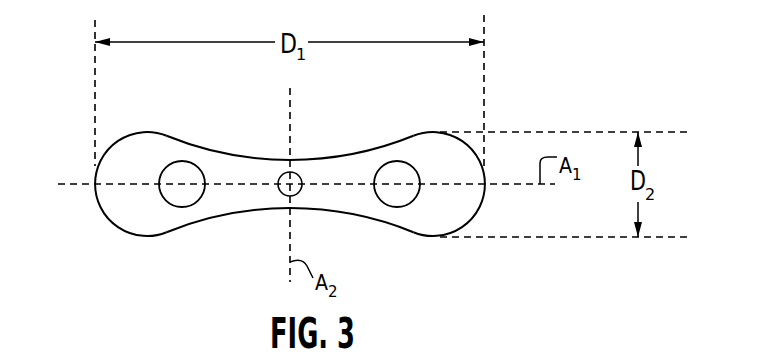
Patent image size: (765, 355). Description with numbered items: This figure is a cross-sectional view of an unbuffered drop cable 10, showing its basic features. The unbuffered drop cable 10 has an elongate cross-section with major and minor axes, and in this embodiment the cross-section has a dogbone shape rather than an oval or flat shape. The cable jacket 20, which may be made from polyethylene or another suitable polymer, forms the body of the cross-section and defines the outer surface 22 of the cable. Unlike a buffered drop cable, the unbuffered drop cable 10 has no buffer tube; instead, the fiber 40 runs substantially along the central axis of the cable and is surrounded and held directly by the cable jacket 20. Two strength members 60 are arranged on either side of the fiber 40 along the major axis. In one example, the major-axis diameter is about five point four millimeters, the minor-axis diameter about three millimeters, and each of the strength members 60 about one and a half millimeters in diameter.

The unbuffered drop cable 10 is at (290, 150).
The cable jacket 20 is at (290, 162).
The outer surface 22 is at (276, 158).
The fiber 40 is at (278, 195).
The strength members 60 is at (194, 196).